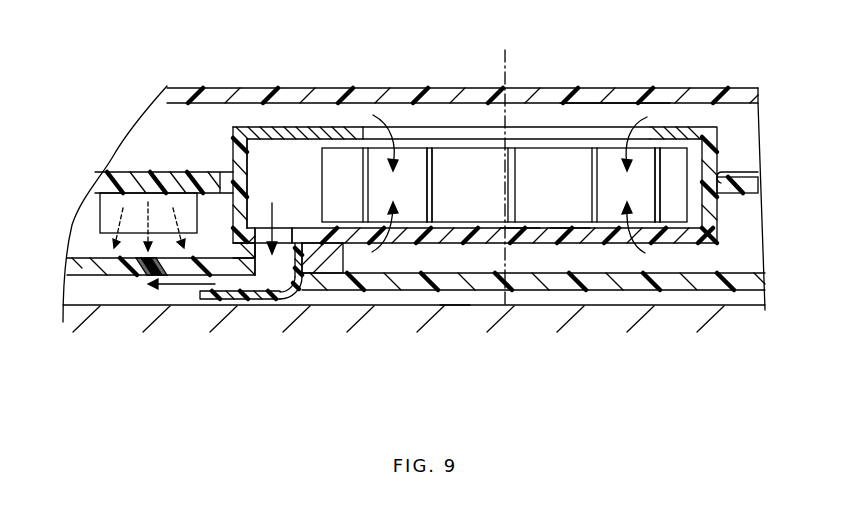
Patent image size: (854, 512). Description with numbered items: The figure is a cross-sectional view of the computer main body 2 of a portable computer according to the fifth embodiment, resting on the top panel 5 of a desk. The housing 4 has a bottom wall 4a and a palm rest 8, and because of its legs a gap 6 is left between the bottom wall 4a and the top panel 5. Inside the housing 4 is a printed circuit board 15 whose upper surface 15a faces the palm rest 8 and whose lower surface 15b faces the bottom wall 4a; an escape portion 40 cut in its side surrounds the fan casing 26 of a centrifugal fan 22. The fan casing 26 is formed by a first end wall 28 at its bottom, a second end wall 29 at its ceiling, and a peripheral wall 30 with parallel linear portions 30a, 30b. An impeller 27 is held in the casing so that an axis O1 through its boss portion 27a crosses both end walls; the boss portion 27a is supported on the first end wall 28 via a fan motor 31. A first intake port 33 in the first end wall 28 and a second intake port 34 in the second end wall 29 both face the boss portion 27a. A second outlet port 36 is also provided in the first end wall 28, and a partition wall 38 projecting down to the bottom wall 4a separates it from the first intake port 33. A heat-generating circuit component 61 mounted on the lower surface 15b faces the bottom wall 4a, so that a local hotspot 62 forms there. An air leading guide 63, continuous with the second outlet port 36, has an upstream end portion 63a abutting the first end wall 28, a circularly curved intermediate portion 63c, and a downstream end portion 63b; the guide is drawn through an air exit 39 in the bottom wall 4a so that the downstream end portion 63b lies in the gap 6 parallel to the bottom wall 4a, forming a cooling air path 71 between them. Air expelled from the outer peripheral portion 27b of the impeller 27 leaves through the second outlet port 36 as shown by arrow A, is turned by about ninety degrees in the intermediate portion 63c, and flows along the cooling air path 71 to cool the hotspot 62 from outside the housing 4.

The computer main body 2 is at (747, 80).
The housing 4 is at (188, 88).
The bottom wall 4a is at (755, 280).
The top panel 5 is at (72, 305).
The gap 6 is at (452, 297).
The palm rest 8 is at (613, 90).
The printed circuit board 15 is at (750, 180).
The upper surface 15a is at (115, 167).
The lower surface 15b is at (110, 195).
The centrifugal fan 22 is at (293, 118).
The fan casing 26 is at (718, 152).
The impeller 27 is at (530, 160).
The boss portion 27a is at (455, 160).
The outer peripheral portion 27b is at (687, 203).
The first end wall 28 is at (520, 233).
The second end wall 29 is at (325, 127).
The peripheral wall 30 is at (233, 160).
The linear portion 30a is at (250, 160).
The linear portion 30b is at (713, 210).
The fan motor 31 is at (567, 233).
The first intake port 33 is at (400, 233).
The second intake port 34 is at (410, 135).
The second outlet port 36 is at (283, 233).
The partition wall 38 is at (333, 263).
The air exit 39 is at (303, 283).
The escape portion 40 is at (722, 168).
The circuit component 61 is at (110, 220).
The hotspot 62 is at (140, 272).
The air leading guide 63 is at (250, 320).
The upstream end portion 63a is at (305, 253).
The downstream end portion 63b is at (200, 295).
The intermediate portion 63c is at (290, 300).
The cooling air path 71 is at (230, 283).
The axis O1 is at (505, 50).
The arrow A is at (270, 216).